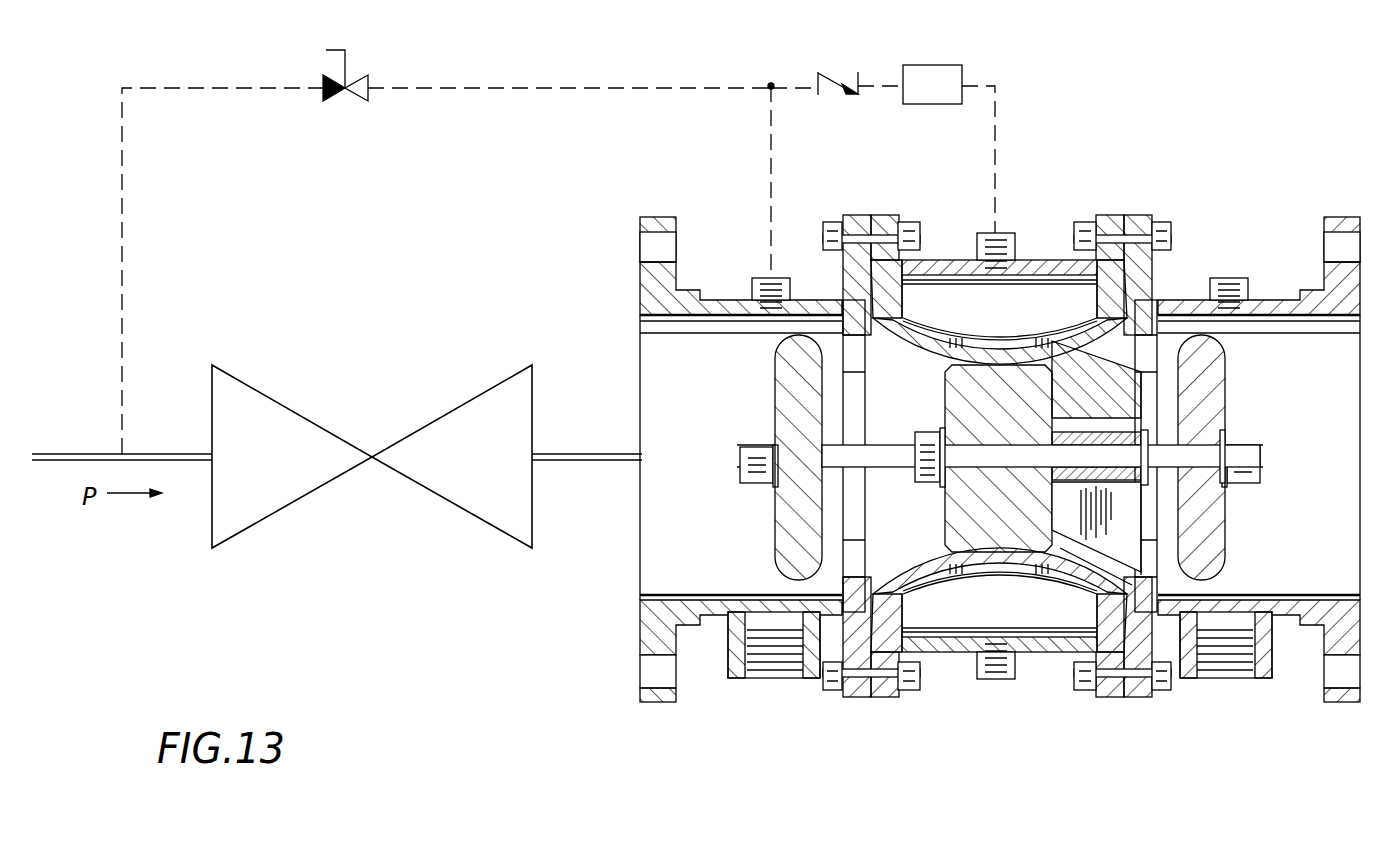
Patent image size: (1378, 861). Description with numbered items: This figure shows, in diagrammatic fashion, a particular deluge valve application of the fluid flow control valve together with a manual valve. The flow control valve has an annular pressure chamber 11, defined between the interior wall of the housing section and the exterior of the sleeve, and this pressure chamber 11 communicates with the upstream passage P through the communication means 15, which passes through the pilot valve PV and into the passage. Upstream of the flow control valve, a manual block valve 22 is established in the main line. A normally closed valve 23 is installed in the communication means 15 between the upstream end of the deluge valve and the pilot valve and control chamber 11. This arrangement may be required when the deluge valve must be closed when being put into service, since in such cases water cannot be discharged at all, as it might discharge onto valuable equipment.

The annular pressure chamber 11 is at (970, 610).
The communication means 15 is at (190, 90).
The manual block valve 22 is at (293, 500).
The normally closed valve 23 is at (332, 95).